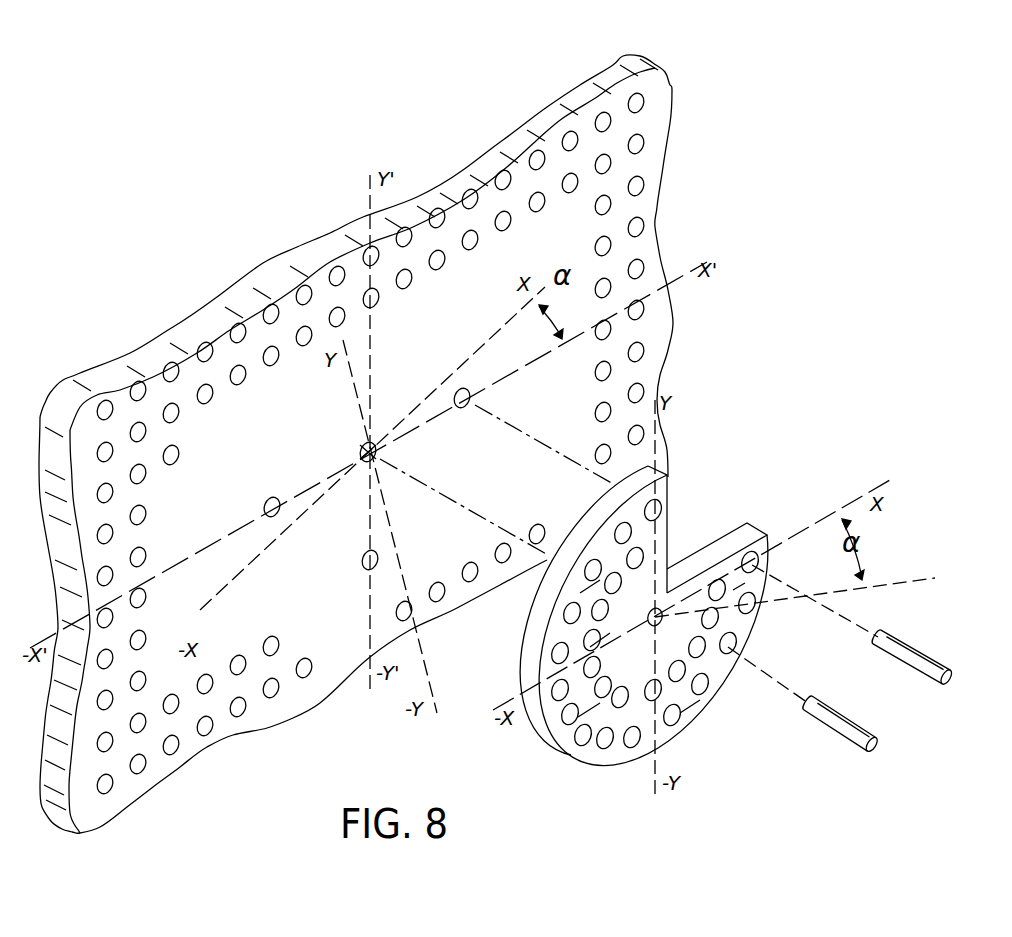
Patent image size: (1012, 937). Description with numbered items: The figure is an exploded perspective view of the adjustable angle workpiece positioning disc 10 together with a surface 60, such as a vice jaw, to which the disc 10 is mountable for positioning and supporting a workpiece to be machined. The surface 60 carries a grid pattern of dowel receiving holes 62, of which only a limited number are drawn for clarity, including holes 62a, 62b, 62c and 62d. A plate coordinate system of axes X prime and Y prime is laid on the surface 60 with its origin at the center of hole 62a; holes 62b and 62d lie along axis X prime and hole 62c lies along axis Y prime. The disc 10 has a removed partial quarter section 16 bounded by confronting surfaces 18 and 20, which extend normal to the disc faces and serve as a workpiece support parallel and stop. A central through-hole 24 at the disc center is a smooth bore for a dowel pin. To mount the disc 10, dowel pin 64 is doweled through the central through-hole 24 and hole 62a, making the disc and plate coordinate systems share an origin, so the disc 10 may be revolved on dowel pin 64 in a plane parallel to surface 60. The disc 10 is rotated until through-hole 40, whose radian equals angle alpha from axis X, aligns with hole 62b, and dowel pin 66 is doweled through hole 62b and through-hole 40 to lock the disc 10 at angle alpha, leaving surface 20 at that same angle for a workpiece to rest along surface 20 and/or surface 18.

The disc 10 is at (645, 635).
The partial quarter section 16 is at (716, 512).
The confronting surface 18 is at (745, 528).
The confronting surface 20 is at (672, 486).
The central through-hole 24 is at (649, 625).
The through-hole 40 is at (733, 652).
The surface 60 is at (538, 165).
The dowel receiving holes 62 is at (364, 248).
The hole 62a is at (363, 462).
The hole 62b is at (462, 390).
The hole 62c is at (362, 567).
The hole 62d is at (273, 498).
The dowel pin 64 is at (838, 717).
The dowel pin 66 is at (946, 661).